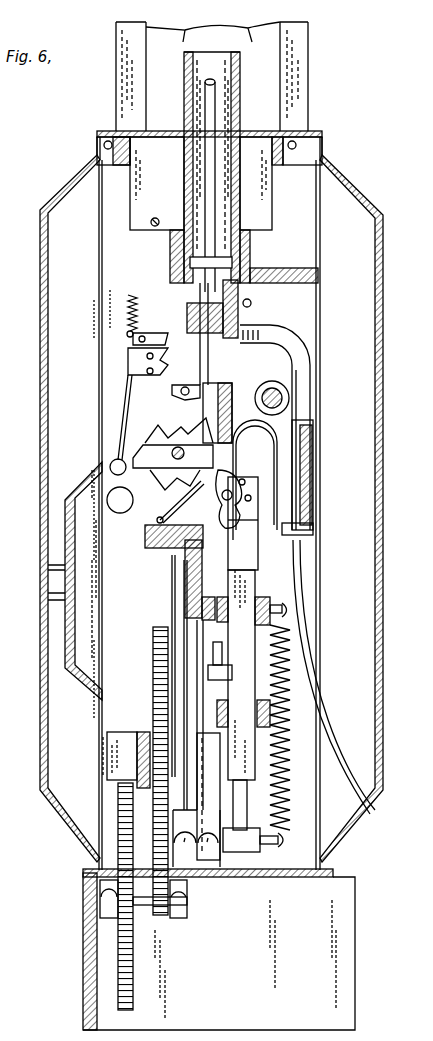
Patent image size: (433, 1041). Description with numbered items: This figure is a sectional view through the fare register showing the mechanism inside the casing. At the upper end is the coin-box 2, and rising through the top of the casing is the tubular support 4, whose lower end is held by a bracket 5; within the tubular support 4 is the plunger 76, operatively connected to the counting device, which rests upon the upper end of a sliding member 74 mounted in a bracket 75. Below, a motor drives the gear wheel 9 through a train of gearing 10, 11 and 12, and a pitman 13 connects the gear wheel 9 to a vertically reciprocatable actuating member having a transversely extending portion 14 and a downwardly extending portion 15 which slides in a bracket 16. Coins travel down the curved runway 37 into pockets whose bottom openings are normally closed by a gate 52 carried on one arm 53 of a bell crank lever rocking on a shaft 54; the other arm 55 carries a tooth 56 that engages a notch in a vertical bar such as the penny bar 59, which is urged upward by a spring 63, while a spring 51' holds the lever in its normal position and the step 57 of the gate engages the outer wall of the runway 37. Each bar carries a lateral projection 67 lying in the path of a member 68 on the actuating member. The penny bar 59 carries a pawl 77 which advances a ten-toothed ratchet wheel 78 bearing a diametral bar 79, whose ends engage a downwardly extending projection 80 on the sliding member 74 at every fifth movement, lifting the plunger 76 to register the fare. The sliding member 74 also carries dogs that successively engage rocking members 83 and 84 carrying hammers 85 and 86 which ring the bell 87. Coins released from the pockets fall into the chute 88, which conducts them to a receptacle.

The coin-box 2 is at (305, 60).
The tubular support 4 is at (242, 78).
The plunger 76 is at (215, 128).
The bracket 5 is at (268, 268).
The sliding member 74 is at (208, 370).
The bracket 75 is at (252, 305).
The runway 37 is at (305, 415).
The shaft 54 is at (285, 400).
The arm of bell crank lever 53 is at (281, 455).
The arm of bell crank lever 55 is at (238, 458).
The projection 80 is at (222, 405).
The ratchet wheel 78 is at (160, 435).
The bar 79 is at (160, 470).
The rocking member 84 is at (165, 340).
The rocking member 83 is at (167, 365).
The hammer 85 is at (110, 462).
The hammer 86 is at (122, 513).
The bell 87 is at (78, 486).
The spring 51' is at (180, 502).
The pawl 77 is at (224, 505).
The tooth 56 is at (248, 505).
The penny bar 59 is at (245, 585).
The step 57 is at (305, 528).
The gate 52 is at (312, 532).
The chute 88 is at (322, 650).
The pitman 13 is at (173, 612).
The transversely extending portion 14 is at (190, 580).
The member 68 is at (207, 597).
The projection 67 is at (230, 672).
The downwardly extending portion 15 is at (198, 705).
The train of gearing 10 is at (196, 800).
The bracket 16 is at (212, 812).
The spring 63 is at (286, 782).
The gear wheel 9 is at (153, 657).
The train of gearing 11 is at (136, 998).
The train of gearing 12 is at (160, 912).